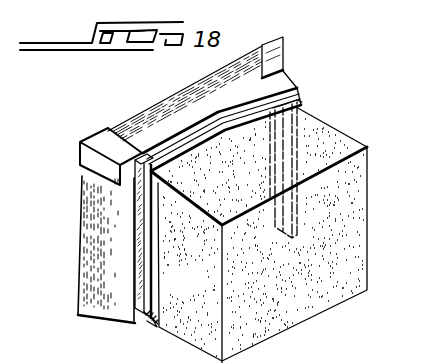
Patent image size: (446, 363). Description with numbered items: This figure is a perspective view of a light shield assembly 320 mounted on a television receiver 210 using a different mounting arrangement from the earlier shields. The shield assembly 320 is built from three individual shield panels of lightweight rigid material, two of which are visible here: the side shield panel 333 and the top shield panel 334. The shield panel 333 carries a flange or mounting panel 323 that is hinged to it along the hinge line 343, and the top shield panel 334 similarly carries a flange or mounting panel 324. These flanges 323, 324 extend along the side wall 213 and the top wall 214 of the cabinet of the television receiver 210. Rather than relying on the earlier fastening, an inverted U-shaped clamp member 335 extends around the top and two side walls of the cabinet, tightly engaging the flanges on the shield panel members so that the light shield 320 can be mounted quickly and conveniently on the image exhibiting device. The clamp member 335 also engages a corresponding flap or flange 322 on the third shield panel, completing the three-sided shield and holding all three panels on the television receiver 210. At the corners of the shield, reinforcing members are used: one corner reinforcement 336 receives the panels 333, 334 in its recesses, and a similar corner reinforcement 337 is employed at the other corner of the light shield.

The television receiver 210 is at (345, 255).
The side wall 213 is at (203, 285).
The top wall 214 is at (303, 132).
The light shield assembly 320 is at (178, 189).
The flange 322 is at (318, 118).
The mounting panel 323 is at (147, 322).
The mounting panel 324 is at (183, 163).
The shield panel 333 is at (107, 268).
The top shield panel 334 is at (172, 107).
The clamp member 335 is at (188, 155).
The corner reinforcement 336 is at (93, 142).
The corner reinforcement 337 is at (283, 42).
The hinge line 343 is at (117, 320).